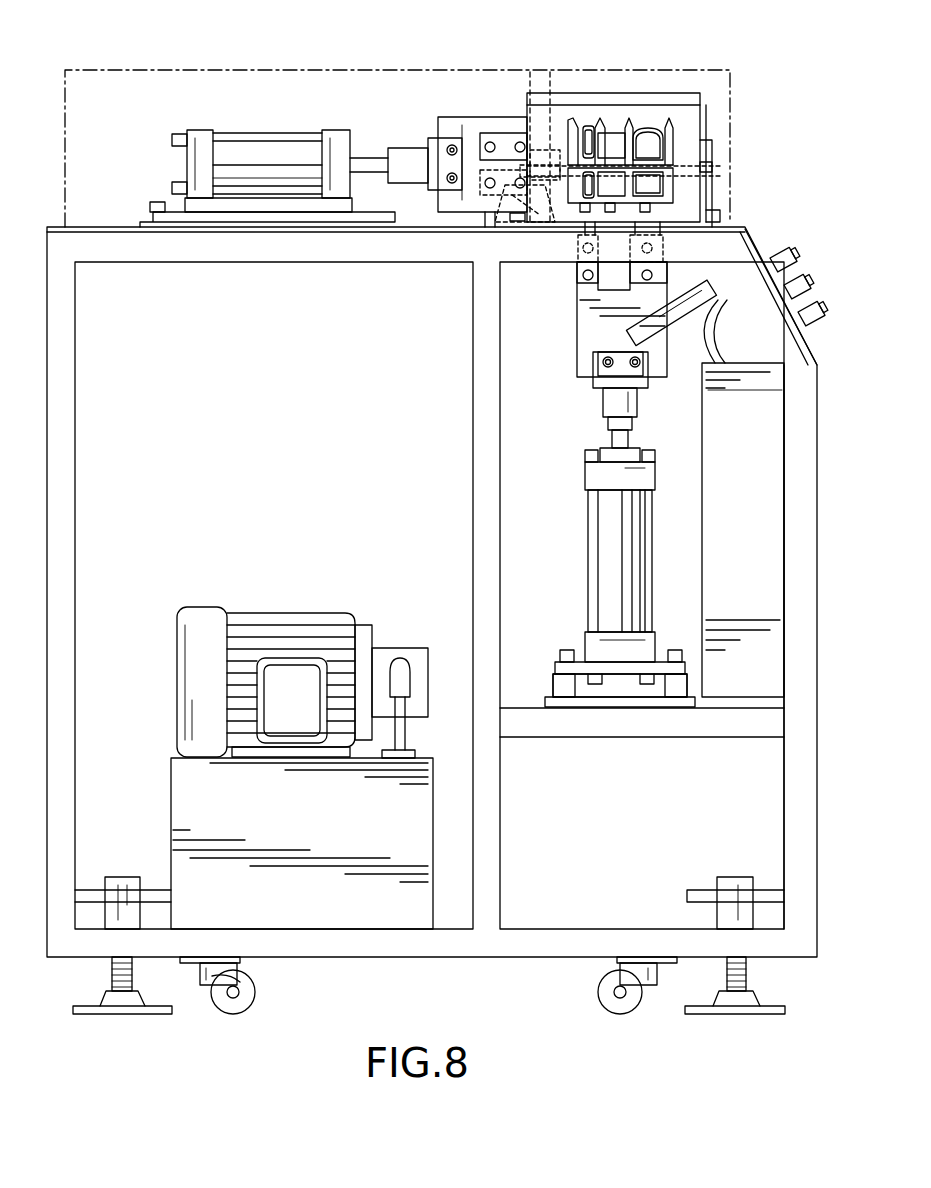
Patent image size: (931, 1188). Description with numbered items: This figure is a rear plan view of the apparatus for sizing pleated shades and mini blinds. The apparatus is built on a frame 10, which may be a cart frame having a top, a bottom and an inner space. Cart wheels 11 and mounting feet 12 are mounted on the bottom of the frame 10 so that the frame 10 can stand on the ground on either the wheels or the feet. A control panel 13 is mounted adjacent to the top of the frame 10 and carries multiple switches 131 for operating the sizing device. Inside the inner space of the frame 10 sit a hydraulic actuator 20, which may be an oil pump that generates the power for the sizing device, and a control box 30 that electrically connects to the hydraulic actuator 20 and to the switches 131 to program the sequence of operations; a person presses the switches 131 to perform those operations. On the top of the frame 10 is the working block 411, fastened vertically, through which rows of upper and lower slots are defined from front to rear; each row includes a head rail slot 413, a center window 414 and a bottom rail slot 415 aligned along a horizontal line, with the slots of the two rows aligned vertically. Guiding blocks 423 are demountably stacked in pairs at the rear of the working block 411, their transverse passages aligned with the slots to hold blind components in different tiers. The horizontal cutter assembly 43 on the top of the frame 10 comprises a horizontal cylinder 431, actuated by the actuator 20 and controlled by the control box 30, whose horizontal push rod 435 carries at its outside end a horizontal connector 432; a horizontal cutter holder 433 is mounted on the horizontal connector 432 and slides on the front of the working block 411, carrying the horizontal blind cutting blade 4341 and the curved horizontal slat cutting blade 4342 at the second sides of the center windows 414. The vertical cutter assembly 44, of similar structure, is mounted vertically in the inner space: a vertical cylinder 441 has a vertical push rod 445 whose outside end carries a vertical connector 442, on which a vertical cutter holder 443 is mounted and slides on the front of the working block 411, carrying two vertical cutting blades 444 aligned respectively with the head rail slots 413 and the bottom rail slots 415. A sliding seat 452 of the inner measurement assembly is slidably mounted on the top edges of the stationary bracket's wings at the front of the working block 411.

The frame 10 is at (795, 672).
The cart wheels 11 is at (605, 990).
The mounting feet 12 is at (735, 1000).
The control panel 13 is at (778, 246).
The switches 131 is at (798, 291).
The hydraulic actuator 20 is at (305, 605).
The control box 30 is at (762, 585).
The horizontal cutter assembly 43 is at (350, 145).
The horizontal cylinder 431 is at (258, 150).
The horizontal connector 432 is at (432, 148).
The horizontal cutter holder 433 is at (478, 128).
The horizontal blind cutting blade 4341 is at (555, 140).
The horizontal slat cutting blade 4342 is at (522, 218).
The horizontal push rod 435 is at (378, 160).
The working block 411 is at (690, 125).
The head rail slot 413 is at (650, 128).
The center window 414 is at (612, 130).
The bottom rail slot 415 is at (590, 128).
The guiding blocks 423 is at (665, 145).
The sliding seat 452 is at (708, 172).
The vertical cutter assembly 44 is at (617, 464).
The vertical cylinder 441 is at (612, 510).
The vertical connector 442 is at (613, 400).
The vertical cutter holder 443 is at (590, 335).
The vertical cutting blades 444 is at (578, 245).
The vertical push rod 445 is at (613, 437).